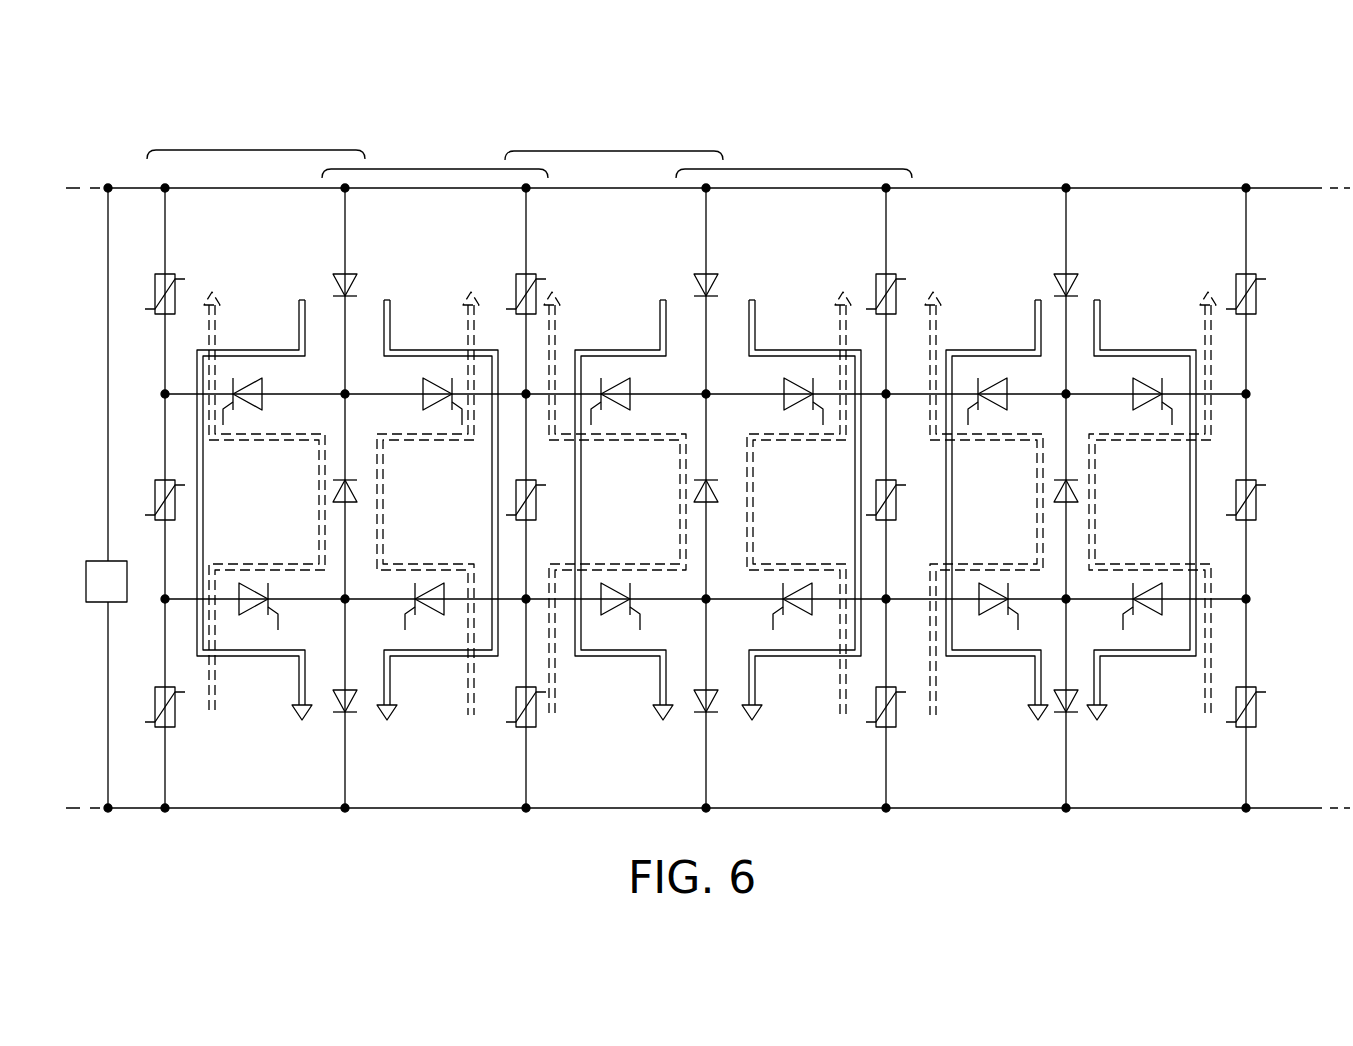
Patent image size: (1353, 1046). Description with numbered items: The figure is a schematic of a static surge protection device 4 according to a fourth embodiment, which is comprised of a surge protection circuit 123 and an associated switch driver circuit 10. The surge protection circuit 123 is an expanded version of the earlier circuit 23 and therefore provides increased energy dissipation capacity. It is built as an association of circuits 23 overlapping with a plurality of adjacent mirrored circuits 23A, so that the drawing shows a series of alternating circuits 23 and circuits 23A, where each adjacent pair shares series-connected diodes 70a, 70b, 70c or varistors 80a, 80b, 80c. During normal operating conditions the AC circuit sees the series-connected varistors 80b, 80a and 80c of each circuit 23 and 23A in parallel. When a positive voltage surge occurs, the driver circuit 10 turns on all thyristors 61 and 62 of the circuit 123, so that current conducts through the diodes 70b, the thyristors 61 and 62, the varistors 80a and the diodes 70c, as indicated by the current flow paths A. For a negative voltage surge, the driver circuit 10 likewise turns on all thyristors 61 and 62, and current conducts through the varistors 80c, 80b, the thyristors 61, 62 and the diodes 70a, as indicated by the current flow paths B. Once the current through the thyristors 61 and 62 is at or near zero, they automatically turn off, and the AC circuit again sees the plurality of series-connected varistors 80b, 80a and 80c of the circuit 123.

The static surge protection device 4 is at (178, 97).
The surge protection circuit 123 is at (402, 130).
The mirrored circuit 23A is at (623, 117).
The circuit 23 is at (817, 123).
The switch driver circuit 10 is at (117, 597).
The thyristor 61 is at (250, 404).
The thyristor 62 is at (255, 585).
The diode 70a is at (352, 497).
The diode 70b is at (336, 287).
The diode 70c is at (350, 700).
The varistor 80a is at (160, 490).
The varistor 80b is at (168, 276).
The varistor 80c is at (172, 708).
The current flow path A is at (270, 656).
The current flow path B is at (218, 335).